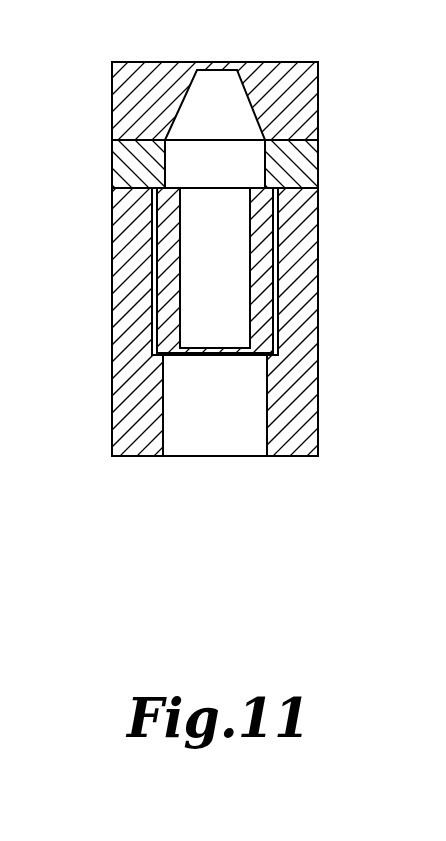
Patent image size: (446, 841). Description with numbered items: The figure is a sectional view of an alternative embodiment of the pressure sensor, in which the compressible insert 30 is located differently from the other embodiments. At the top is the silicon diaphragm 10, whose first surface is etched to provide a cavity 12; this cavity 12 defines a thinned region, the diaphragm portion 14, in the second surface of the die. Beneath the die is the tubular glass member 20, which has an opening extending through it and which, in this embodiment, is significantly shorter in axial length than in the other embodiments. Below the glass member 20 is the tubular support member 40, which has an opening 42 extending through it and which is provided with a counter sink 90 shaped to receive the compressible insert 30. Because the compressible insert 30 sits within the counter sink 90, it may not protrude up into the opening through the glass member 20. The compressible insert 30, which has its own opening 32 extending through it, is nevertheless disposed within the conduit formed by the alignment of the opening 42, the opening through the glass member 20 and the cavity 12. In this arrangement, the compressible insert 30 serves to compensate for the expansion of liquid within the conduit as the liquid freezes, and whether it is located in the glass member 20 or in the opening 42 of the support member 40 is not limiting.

The silicon diaphragm 10 is at (223, 300).
The cavity 12 is at (255, 90).
The diaphragm portion 14 is at (215, 62).
The tubular glass member 20 is at (118, 165).
The compressible insert 30 is at (223, 300).
The opening of compressible insert 32 is at (212, 332).
The tubular support member 40 is at (223, 300).
The opening of tubular support member 42 is at (215, 442).
The counter sink 90 is at (148, 270).